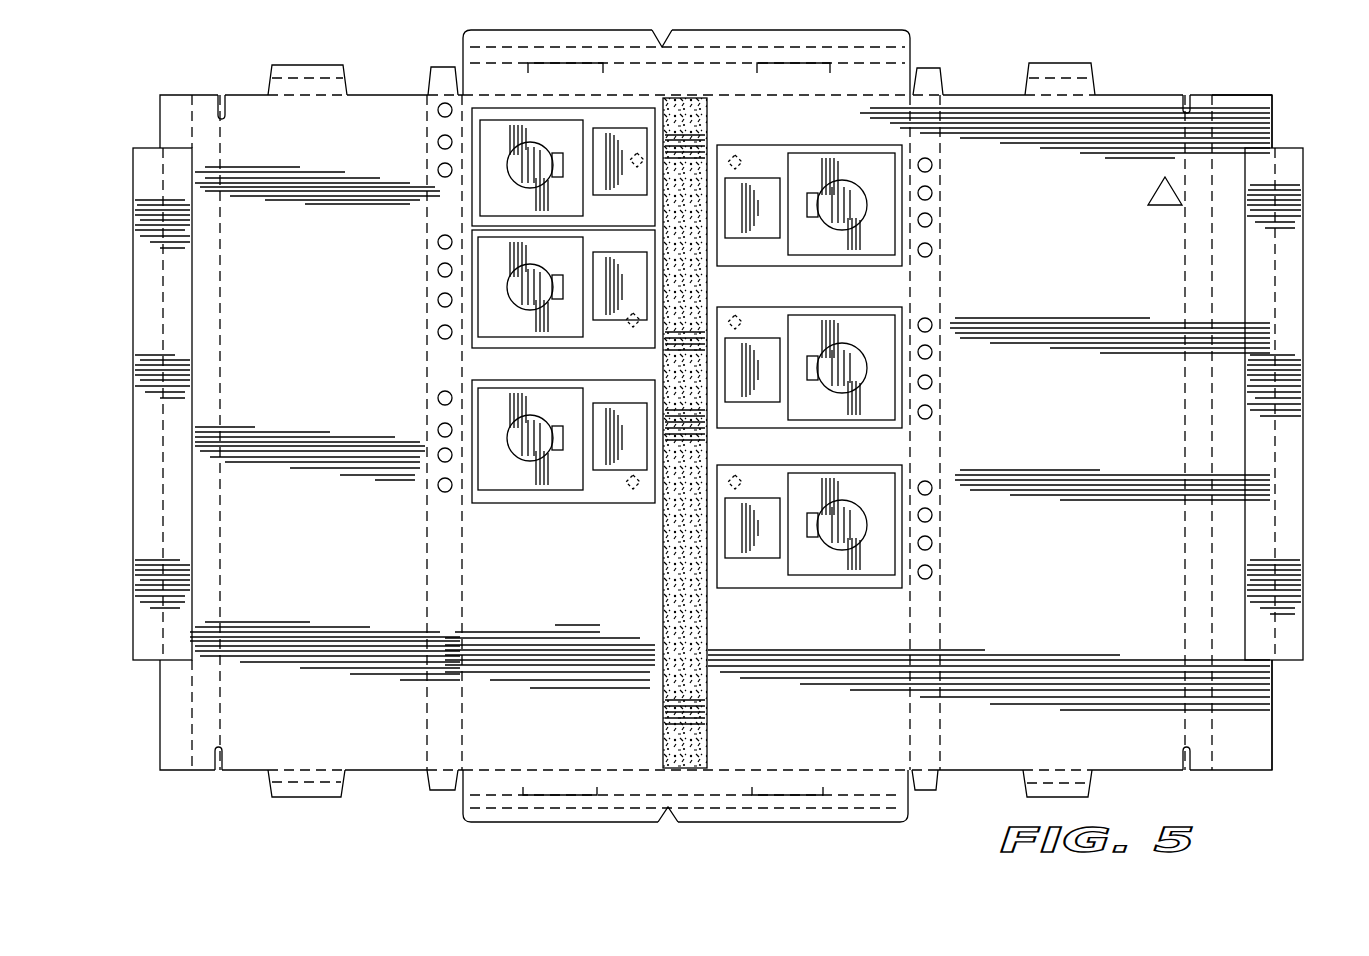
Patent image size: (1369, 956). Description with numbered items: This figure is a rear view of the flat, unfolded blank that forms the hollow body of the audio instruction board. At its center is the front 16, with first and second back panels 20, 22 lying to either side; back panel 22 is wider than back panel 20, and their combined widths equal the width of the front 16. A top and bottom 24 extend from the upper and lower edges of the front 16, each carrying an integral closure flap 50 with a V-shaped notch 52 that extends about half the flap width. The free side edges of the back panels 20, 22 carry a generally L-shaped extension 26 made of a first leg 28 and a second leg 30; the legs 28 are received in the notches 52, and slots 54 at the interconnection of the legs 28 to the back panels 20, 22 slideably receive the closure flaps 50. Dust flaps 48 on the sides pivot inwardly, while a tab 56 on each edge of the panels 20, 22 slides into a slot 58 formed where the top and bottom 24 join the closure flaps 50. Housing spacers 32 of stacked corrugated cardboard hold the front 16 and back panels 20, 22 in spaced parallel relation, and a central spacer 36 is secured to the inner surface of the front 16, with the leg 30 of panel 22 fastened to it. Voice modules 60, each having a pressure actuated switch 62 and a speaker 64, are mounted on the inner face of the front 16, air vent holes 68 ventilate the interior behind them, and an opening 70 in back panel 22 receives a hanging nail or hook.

The front 16 is at (596, 605).
The first back panel 20 is at (352, 606).
The second back panel 22 is at (1112, 616).
The top and bottom 24 is at (893, 76).
The L-shaped extension 26 is at (1250, 100).
The first leg 28 is at (1206, 100).
The second leg 30 is at (1260, 126).
The housing spacer 32 is at (177, 408).
The central spacer 36 is at (707, 290).
The dust flap 48 is at (448, 80).
The closure flap 50 is at (575, 53).
The V-shaped notch 52 is at (668, 44).
The slot 54 is at (227, 108).
The tab 56 is at (303, 72).
The slot 58 is at (568, 70).
The voice module 60 is at (472, 154).
The pressure actuated switch 62 is at (738, 152).
The speaker 64 is at (480, 188).
The air vent hole 68 is at (934, 250).
The opening 70 is at (1170, 206).